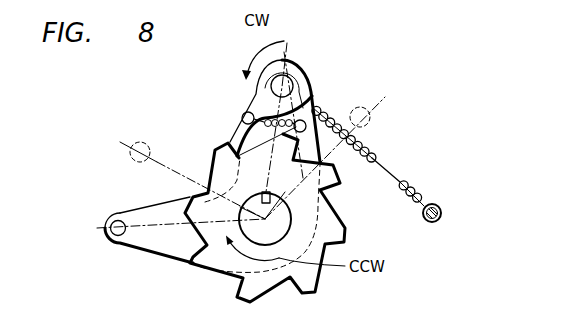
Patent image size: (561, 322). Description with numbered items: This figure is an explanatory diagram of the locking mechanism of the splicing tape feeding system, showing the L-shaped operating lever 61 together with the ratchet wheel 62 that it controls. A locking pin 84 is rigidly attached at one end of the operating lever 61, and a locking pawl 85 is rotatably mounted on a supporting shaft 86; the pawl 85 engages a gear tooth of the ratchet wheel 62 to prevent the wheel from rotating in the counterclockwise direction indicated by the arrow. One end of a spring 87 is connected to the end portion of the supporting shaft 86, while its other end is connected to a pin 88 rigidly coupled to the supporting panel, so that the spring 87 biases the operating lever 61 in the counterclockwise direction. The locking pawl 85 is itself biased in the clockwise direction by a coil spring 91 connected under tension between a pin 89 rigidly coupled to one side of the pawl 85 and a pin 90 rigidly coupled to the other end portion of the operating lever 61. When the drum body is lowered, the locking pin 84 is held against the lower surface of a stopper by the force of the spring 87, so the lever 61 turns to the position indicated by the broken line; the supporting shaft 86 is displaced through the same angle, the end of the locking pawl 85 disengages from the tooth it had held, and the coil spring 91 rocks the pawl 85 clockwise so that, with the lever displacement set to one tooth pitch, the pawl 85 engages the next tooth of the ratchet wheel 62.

The L-shaped operating lever 61 is at (157, 245).
The ratchet wheel 62 is at (302, 277).
The locking pin 84 is at (115, 222).
The locking pawl 85 is at (258, 102).
The supporting shaft 86 is at (286, 78).
The spring 87 is at (386, 170).
The pin 88 is at (444, 216).
The pin 89 is at (242, 117).
The pin 90 is at (312, 108).
The coil spring 91 is at (263, 192).